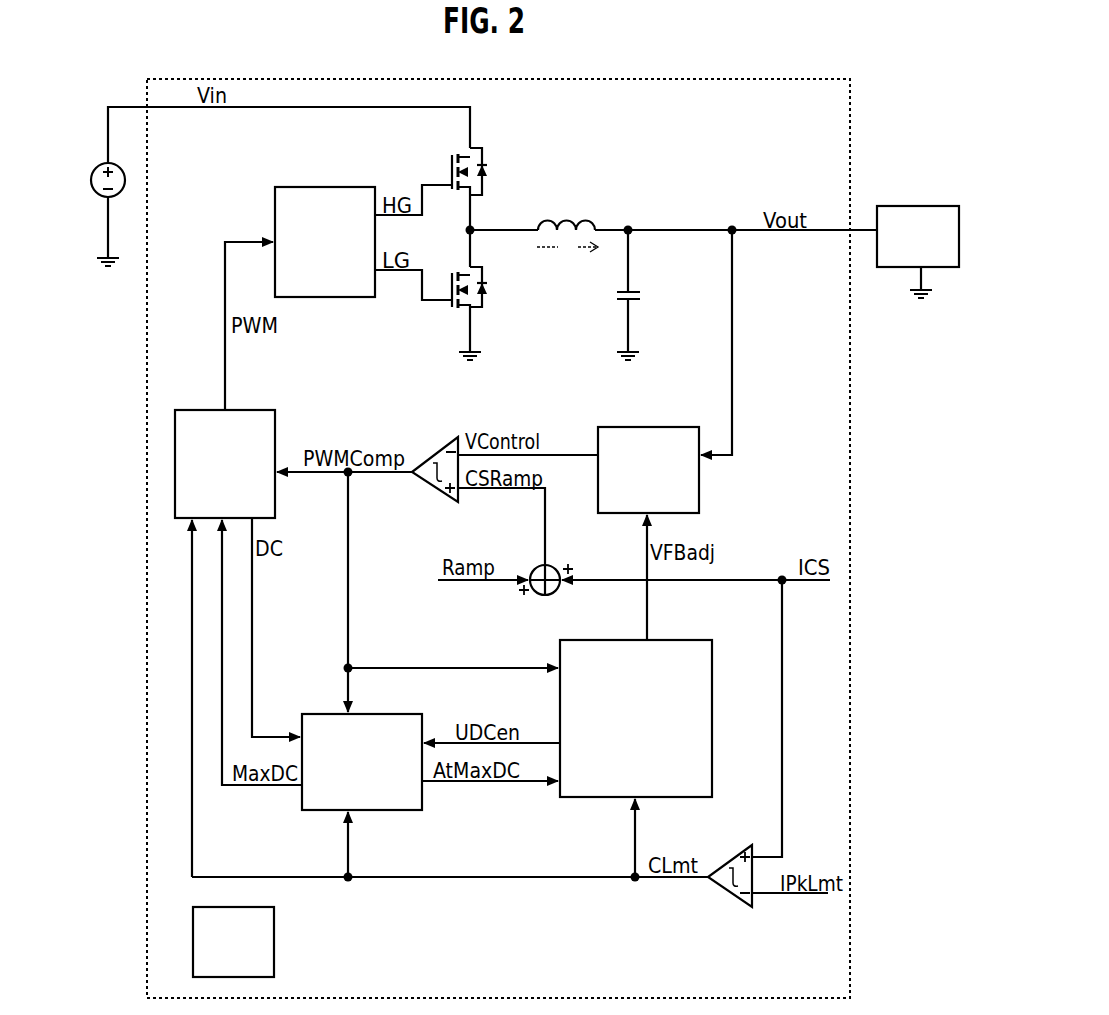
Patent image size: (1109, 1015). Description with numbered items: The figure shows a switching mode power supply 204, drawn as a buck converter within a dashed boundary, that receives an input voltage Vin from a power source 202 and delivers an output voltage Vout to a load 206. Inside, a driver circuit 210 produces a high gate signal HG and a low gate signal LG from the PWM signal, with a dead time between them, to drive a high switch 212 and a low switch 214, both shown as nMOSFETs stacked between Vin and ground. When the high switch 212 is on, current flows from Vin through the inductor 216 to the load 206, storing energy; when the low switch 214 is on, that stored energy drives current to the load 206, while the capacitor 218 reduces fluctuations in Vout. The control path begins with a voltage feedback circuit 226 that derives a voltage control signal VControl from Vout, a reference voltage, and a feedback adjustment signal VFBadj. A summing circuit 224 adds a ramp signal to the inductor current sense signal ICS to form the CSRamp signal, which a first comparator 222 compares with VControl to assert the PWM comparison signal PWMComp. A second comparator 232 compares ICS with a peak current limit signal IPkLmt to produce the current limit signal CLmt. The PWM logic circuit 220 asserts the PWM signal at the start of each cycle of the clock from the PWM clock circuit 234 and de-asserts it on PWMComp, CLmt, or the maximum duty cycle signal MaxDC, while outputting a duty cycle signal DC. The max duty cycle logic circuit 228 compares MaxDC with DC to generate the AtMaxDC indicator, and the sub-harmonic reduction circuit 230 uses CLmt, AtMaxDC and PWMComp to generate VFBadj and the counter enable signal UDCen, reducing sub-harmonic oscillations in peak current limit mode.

The power source 202 is at (93, 168).
The switching mode power supply 204 is at (662, 78).
The load 206 is at (917, 205).
The driver circuit 210 is at (310, 186).
The high switch 212 is at (448, 158).
The low switch 214 is at (448, 307).
The inductor 216 is at (575, 222).
The capacitor 218 is at (617, 294).
The PWM logic circuit 220 is at (250, 410).
The first comparator 222 is at (432, 452).
The summing circuit 224 is at (532, 592).
The voltage feedback circuit 226 is at (669, 427).
The max duty cycle logic circuit 228 is at (318, 810).
The sub-harmonic reduction circuit 230 is at (575, 797).
The second comparator 232 is at (726, 892).
The PWM clock circuit 234 is at (276, 943).